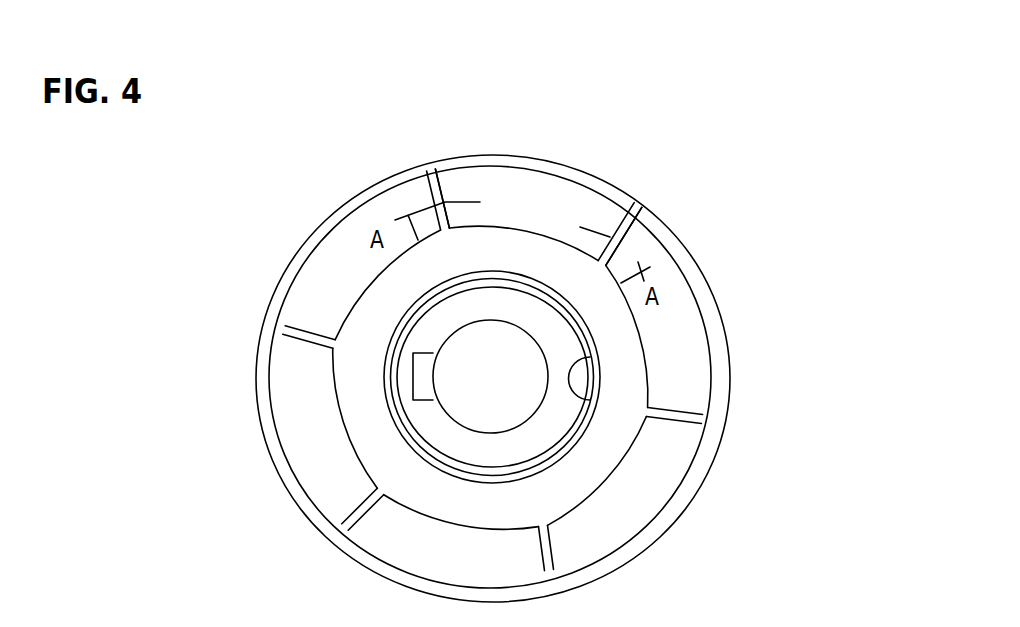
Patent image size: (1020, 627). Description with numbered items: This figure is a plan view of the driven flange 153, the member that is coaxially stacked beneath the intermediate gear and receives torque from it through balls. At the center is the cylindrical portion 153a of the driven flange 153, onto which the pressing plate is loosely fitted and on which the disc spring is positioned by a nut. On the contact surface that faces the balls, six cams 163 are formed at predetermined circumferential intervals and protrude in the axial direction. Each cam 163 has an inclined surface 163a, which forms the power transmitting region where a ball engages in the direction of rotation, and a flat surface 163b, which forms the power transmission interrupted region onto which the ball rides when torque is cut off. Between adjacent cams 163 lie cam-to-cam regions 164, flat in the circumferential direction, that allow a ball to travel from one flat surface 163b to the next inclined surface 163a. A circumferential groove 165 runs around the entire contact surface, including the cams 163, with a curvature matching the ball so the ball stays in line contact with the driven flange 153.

The driven flange 153 is at (288, 262).
The cylindrical portion 153a is at (557, 430).
The cam 163 is at (430, 178).
The inclined surface 163a is at (417, 203).
The flat surface 163b is at (440, 200).
The cam-to-cam region 164 is at (505, 197).
The circumferential groove 165 is at (543, 196).